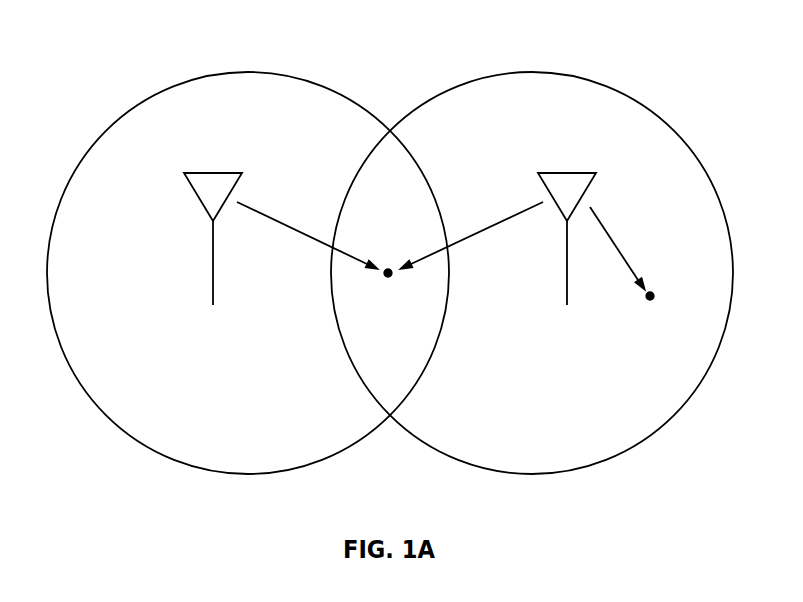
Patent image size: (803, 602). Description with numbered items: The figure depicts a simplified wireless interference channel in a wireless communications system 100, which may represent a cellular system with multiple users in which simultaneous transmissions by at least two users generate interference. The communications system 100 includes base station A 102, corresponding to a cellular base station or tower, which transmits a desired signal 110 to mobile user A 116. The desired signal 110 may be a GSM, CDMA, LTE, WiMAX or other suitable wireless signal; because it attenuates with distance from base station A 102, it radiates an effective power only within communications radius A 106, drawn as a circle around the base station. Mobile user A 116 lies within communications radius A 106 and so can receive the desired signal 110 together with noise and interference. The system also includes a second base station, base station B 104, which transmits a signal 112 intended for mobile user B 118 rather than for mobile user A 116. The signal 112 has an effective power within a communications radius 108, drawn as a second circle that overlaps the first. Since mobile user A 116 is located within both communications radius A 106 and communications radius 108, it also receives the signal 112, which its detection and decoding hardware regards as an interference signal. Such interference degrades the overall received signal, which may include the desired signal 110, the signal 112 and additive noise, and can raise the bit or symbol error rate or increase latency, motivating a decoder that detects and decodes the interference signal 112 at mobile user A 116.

The wireless communications system 100 is at (72, 29).
The base station A 102 is at (213, 173).
The base station B 104 is at (567, 173).
The communications radius A 106 is at (248, 72).
The communications radius 108 is at (531, 72).
The desired signal 110 is at (285, 227).
The signal 112 is at (482, 233).
The mobile user A 116 is at (391, 309).
The mobile user B 118 is at (648, 329).